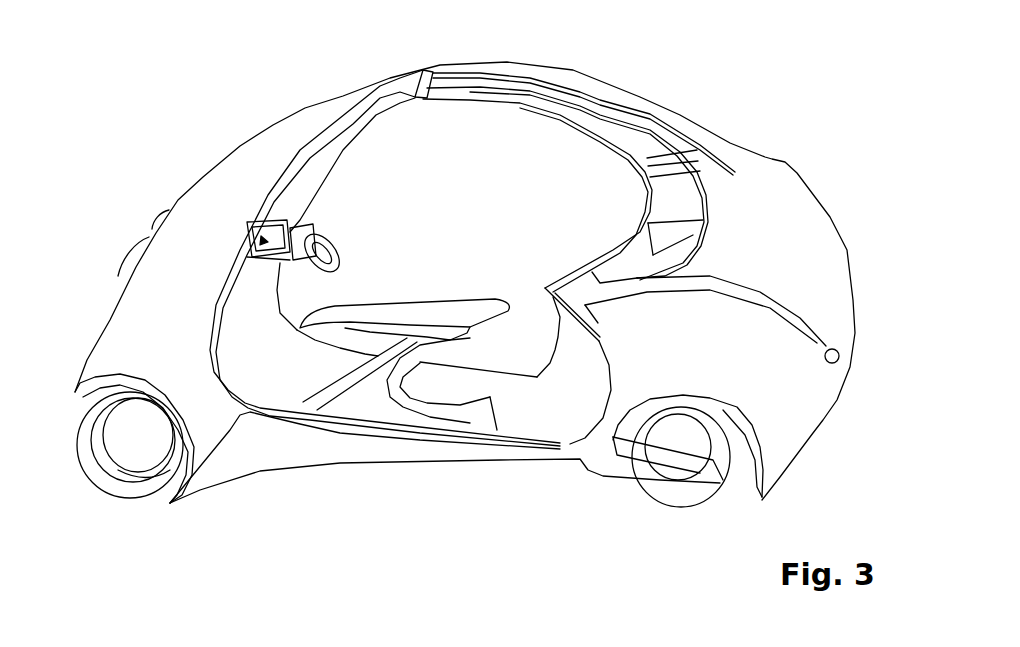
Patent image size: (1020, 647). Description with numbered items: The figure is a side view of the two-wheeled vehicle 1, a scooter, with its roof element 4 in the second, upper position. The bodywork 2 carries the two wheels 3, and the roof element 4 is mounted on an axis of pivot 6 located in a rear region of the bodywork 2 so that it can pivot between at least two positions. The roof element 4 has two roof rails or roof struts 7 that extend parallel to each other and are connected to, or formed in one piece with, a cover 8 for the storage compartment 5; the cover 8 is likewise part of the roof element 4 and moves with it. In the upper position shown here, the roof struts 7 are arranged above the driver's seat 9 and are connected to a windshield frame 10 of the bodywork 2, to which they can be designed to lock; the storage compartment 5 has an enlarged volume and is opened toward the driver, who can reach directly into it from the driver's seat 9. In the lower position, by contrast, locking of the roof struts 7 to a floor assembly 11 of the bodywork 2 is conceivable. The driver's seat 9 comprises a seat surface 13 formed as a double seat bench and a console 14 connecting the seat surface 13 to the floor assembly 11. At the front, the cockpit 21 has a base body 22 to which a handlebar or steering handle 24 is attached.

The two-wheeled vehicle 1 is at (465, 269).
The bodywork 2 is at (113, 356).
The wheels 3 is at (403, 472).
The roof element 4 is at (583, 103).
The storage compartment 5 is at (567, 183).
The axis of pivot 6 is at (867, 372).
The roof struts 7 is at (584, 88).
The cover 8 is at (727, 331).
The driver's seat 9 is at (546, 307).
The windshield frame 10 is at (431, 251).
The floor assembly 11 is at (474, 384).
The seat surface 13 is at (403, 302).
The console 14 is at (446, 433).
The cockpit 21 is at (211, 204).
The base body 22 is at (265, 296).
The steering handle 24 is at (337, 228).